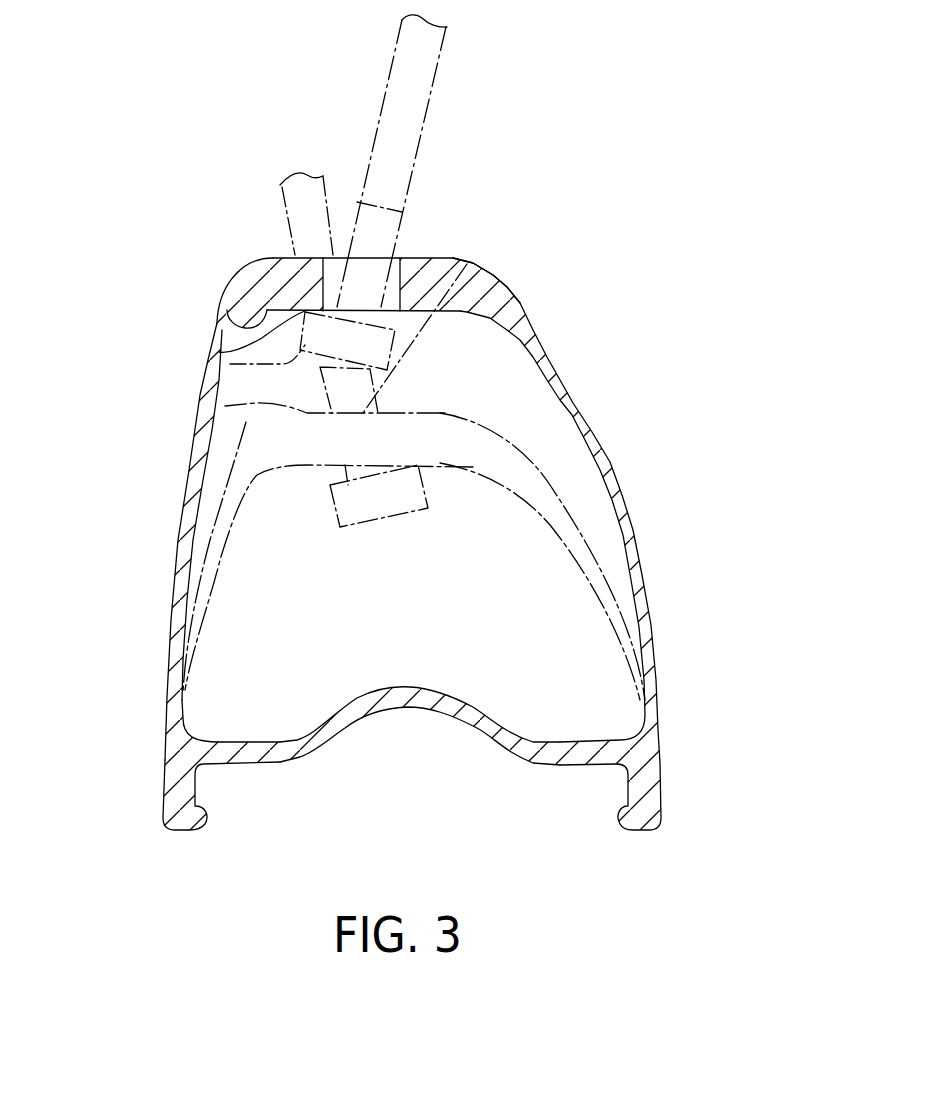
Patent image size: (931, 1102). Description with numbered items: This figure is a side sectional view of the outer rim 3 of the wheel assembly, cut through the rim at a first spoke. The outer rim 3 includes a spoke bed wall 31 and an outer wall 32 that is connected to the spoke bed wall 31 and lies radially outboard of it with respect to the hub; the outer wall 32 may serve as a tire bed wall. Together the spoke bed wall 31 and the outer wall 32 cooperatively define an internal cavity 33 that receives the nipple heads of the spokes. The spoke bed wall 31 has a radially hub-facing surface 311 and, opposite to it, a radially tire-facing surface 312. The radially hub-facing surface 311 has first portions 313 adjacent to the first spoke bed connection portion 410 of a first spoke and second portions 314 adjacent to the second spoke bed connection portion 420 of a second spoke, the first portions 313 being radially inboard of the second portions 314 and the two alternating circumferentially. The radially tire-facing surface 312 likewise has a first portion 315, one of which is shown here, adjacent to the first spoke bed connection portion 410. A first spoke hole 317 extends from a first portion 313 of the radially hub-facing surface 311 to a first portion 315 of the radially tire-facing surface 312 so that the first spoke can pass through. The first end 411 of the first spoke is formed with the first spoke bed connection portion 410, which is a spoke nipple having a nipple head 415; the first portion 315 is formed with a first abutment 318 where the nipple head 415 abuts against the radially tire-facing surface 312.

The outer rim 3 is at (775, 518).
The spoke bed wall 31 is at (272, 275).
The outer wall 32 is at (487, 720).
The internal cavity 33 is at (207, 505).
The radially hub-facing surface 311 is at (238, 273).
The radially tire-facing surface 312 is at (245, 318).
The first portions of the radially hub-facing surface 313 is at (272, 259).
The second portions of the radially hub-facing surface 314 is at (217, 410).
The first portions of the radially tire-facing surface 315 is at (225, 318).
The first spoke hole 317 is at (332, 285).
The first abutment 318 is at (230, 352).
The first spoke bed connection portion 410 is at (360, 257).
The first end 411 is at (405, 243).
The nipple head 415 is at (193, 380).
The second spoke bed connection portion 420 is at (460, 272).